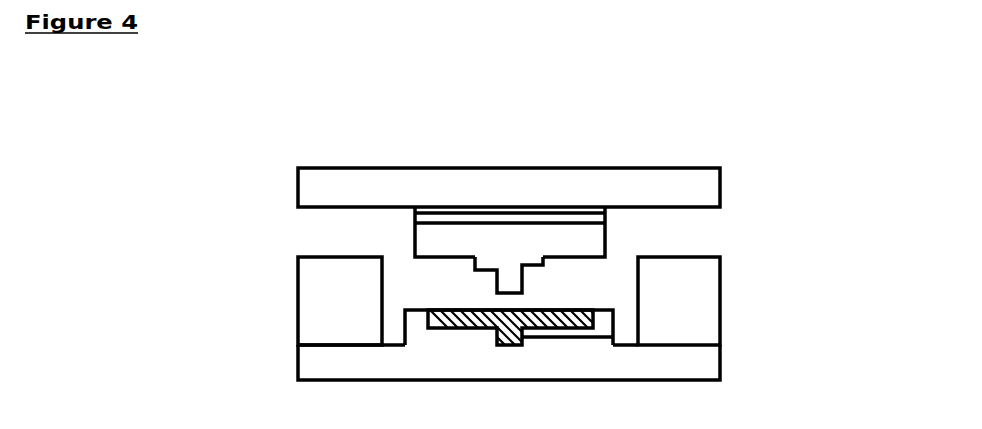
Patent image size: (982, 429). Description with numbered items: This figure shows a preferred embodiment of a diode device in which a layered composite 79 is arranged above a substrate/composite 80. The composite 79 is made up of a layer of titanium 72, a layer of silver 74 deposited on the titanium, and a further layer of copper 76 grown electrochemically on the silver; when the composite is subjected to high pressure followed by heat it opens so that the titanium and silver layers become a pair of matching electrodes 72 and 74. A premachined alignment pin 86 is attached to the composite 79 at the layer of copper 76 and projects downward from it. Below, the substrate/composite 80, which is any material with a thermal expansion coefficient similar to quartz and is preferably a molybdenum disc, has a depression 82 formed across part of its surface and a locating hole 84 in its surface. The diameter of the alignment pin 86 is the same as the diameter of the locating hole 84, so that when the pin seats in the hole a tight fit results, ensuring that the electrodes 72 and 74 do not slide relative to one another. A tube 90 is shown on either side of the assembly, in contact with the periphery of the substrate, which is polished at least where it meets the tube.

The composite 79 is at (275, 172).
The layer of titanium 72 is at (542, 210).
The layer of silver 74 is at (590, 218).
The layer of copper 76 is at (592, 238).
The alignment pin 86 is at (512, 277).
The tube 90 is at (509, 301).
The depression 82 is at (593, 317).
The substrate/composite 80 is at (525, 335).
The locating hole 84 is at (722, 344).